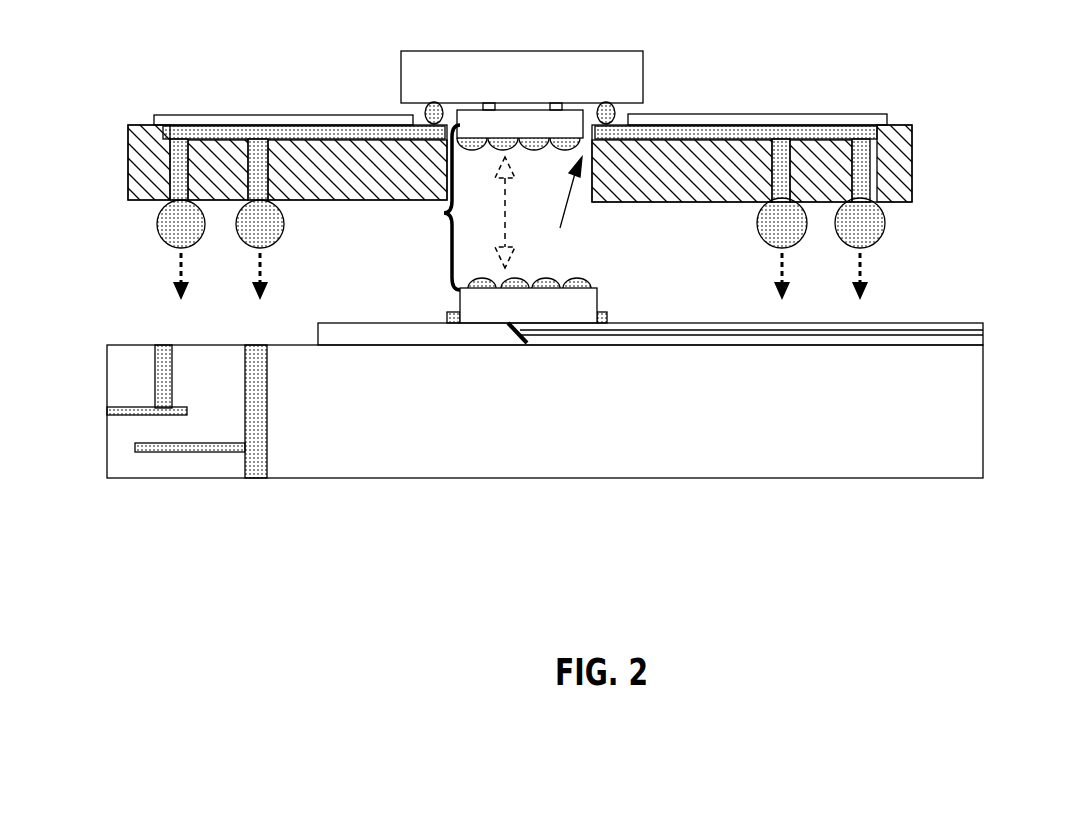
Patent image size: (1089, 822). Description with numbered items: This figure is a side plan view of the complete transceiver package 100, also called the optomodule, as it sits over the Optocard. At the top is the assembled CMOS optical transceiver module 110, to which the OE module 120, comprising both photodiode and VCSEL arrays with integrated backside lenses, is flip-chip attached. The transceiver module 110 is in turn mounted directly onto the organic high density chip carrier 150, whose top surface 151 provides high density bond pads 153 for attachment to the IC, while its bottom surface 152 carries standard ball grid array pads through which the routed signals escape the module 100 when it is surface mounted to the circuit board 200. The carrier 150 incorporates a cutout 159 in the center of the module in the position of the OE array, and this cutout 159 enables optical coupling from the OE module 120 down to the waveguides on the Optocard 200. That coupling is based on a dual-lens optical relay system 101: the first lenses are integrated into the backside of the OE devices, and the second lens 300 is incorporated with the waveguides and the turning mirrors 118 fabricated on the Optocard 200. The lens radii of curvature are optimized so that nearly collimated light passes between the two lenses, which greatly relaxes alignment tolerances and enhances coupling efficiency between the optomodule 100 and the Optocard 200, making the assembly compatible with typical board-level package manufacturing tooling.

The transceiver package 100 is at (1008, 45).
The dual-lens optical relay system 101 is at (429, 207).
The CMOS optical transceiver module 110 is at (400, 52).
The turning mirrors 118 is at (507, 335).
The OE module 120 is at (573, 112).
The carrier 150 is at (912, 152).
The top surface 151 is at (137, 125).
The bottom surface 152 is at (380, 201).
The bond pads 153 is at (428, 108).
The cutout 159 is at (540, 212).
The circuit board 200 is at (1003, 322).
The second lens 300 is at (597, 306).